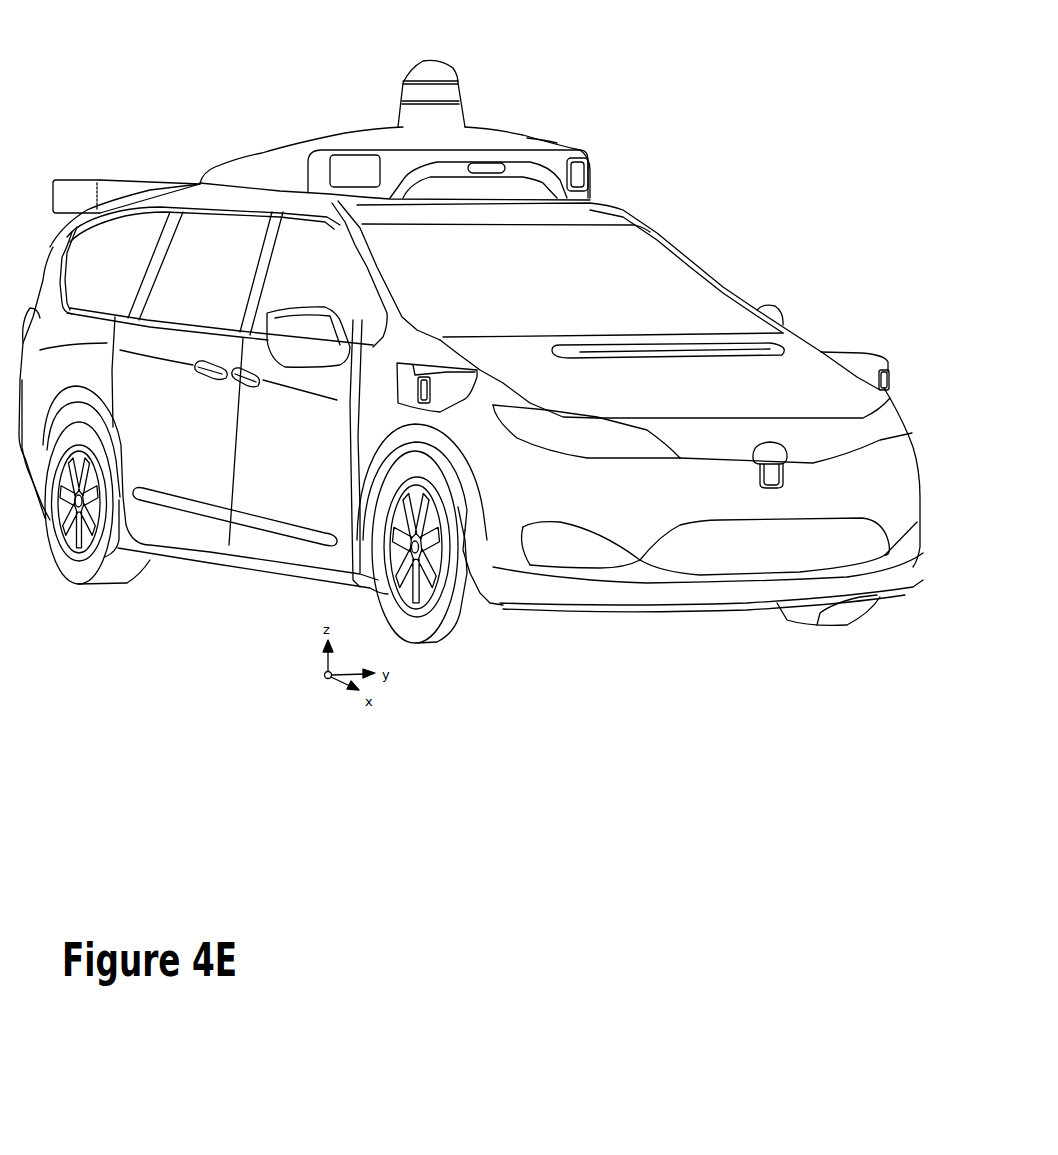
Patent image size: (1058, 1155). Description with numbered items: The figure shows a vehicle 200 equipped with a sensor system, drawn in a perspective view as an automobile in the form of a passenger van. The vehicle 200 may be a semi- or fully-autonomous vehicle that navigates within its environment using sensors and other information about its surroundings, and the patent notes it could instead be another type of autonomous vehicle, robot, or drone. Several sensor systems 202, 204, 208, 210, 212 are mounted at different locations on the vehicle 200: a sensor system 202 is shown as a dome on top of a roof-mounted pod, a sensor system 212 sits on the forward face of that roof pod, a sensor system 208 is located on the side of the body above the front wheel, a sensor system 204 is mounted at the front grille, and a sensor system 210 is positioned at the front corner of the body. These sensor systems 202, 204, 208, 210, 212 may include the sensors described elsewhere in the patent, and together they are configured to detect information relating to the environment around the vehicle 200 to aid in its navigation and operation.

The vehicle 200 is at (747, 90).
The sensor system 202 is at (452, 68).
The sensor system 204 is at (770, 487).
The sensor system 208 is at (420, 402).
The sensor system 210 is at (886, 390).
The sensor system 212 is at (493, 177).